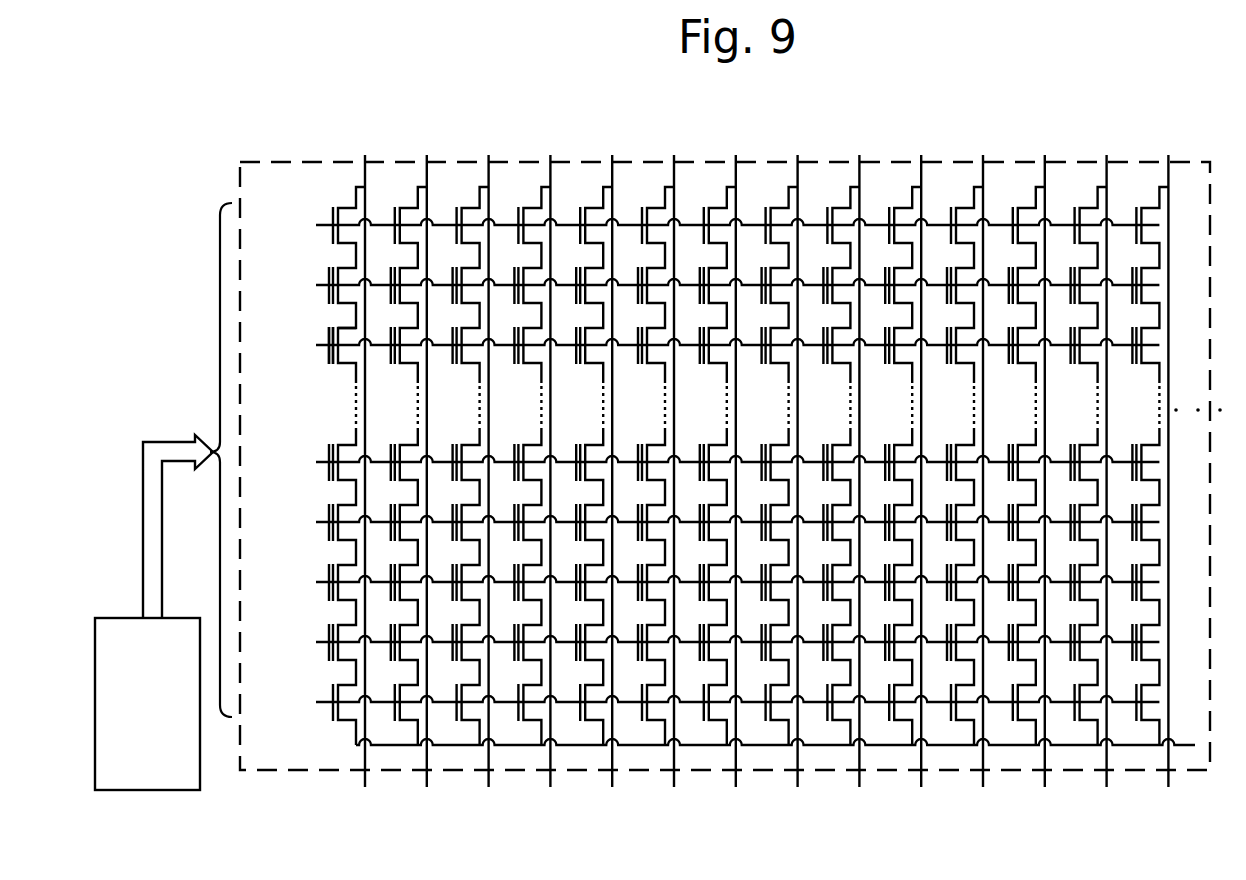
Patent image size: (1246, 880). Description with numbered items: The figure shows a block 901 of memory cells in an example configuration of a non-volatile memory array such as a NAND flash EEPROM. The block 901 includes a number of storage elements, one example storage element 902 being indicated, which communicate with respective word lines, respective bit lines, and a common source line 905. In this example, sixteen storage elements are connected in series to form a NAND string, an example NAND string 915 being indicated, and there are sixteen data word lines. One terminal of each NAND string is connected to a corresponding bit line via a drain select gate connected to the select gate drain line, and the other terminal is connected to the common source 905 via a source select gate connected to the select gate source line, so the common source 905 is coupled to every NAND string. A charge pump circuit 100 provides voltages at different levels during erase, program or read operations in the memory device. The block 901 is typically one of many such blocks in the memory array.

The block of memory cells 901 is at (311, 162).
The storage element 902 is at (333, 309).
The common source line 905 is at (1130, 748).
The NAND string 915 is at (352, 801).
The charge pump circuit 100 is at (154, 612).